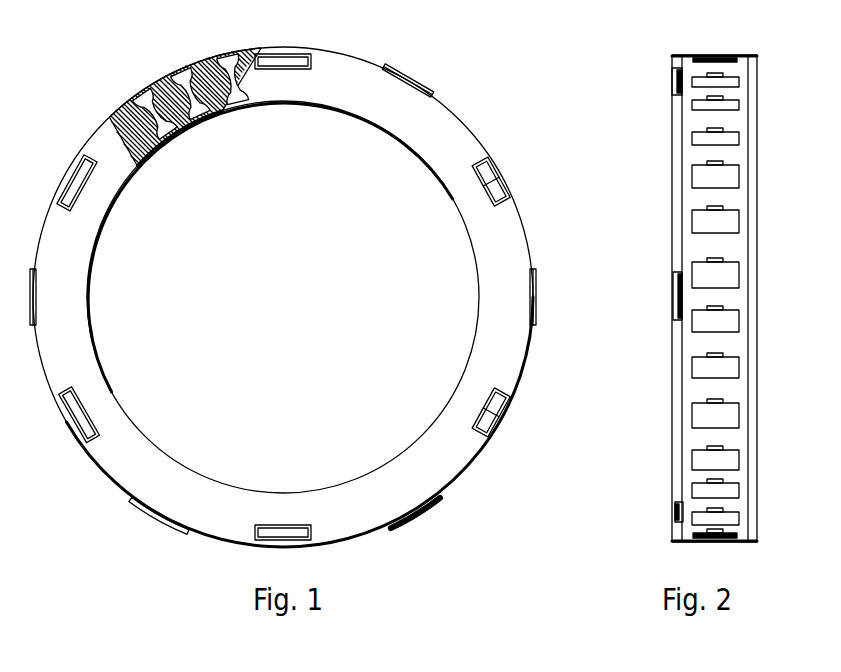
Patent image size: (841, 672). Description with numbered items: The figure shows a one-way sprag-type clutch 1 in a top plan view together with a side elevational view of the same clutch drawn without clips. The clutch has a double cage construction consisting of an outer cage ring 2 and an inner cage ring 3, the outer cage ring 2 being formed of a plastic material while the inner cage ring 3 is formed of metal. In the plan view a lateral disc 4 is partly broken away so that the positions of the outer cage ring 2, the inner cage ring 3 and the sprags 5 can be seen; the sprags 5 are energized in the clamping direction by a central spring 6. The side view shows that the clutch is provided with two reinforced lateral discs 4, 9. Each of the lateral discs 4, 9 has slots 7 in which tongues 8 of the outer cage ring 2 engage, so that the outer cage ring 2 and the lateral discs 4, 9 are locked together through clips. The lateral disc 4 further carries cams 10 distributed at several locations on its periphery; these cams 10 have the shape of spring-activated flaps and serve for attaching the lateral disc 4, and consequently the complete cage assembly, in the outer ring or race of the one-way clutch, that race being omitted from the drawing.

In FIG. 1, the one-way sprag-type clutch 1 is at (176, 556).
In FIG. 1, the outer cage ring 2 is at (217, 62).
In FIG. 2, the outer cage ring 2 is at (692, 342).
In FIG. 1, the inner cage ring 3 is at (217, 117).
In FIG. 1, the lateral disc 4 is at (150, 445).
In FIG. 2, the lateral disc 4 is at (672, 57).
In FIG. 1, the sprag 5 is at (183, 80).
In FIG. 1, the central spring 6 is at (163, 85).
In FIG. 1, the slot 7 is at (510, 203).
In FIG. 1, the tongue 8 is at (493, 180).
In FIG. 2, the lateral disc 9 is at (752, 55).
In FIG. 1, the cam 10 is at (428, 82).
In FIG. 2, the cam 10 is at (672, 80).